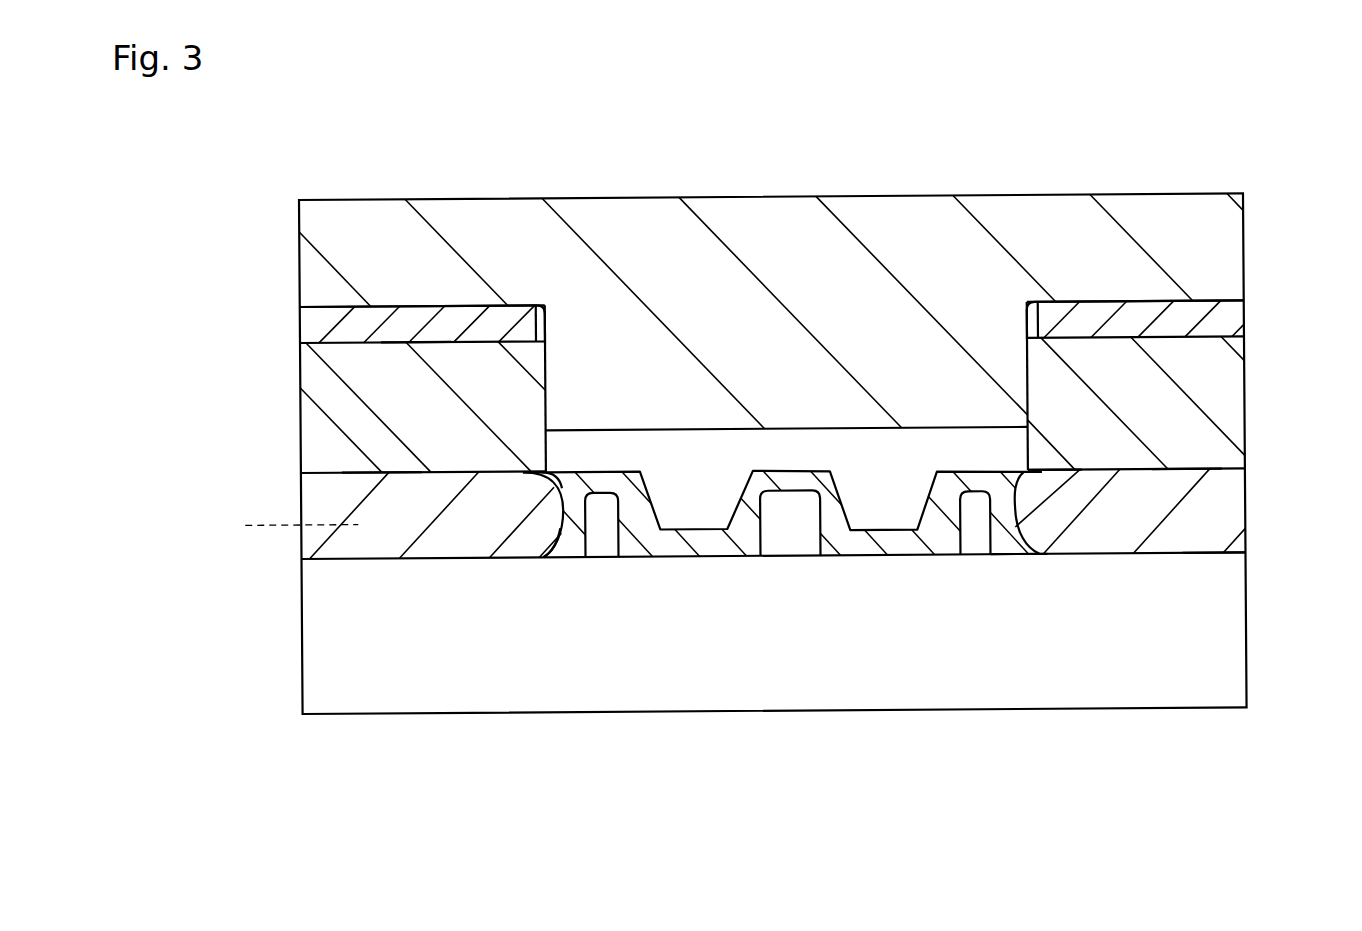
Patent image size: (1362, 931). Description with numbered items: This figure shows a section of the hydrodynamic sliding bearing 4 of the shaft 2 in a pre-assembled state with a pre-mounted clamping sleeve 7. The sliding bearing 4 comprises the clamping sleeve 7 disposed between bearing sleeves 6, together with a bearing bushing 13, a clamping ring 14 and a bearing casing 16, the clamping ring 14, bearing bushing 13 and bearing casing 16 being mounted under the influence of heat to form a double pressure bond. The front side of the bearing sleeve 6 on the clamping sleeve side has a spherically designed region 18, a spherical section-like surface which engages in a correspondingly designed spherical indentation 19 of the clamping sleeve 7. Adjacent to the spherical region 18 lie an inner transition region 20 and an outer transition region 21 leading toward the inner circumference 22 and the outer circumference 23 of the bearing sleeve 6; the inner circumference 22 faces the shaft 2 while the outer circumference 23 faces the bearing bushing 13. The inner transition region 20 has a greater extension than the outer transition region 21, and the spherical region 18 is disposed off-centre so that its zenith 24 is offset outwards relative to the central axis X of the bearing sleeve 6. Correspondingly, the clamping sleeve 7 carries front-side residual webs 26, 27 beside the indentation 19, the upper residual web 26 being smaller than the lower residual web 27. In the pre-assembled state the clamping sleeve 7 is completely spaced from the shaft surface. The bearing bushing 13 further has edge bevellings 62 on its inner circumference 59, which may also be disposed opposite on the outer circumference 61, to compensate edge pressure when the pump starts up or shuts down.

The shaft 2 is at (470, 684).
The sliding bearing 4 is at (415, 597).
The bearing sleeve 6 is at (338, 546).
The clamping sleeve 7 is at (709, 545).
The bearing bushing 13 is at (300, 407).
The clamping ring 14 is at (311, 314).
The bearing casing 16 is at (330, 232).
The spherically designed region 18 is at (1041, 535).
The spherical indentation 19 is at (993, 535).
The inner transition region 20 is at (1027, 567).
The outer transition region 21 is at (1065, 488).
The inner circumference 22 is at (1220, 572).
The outer circumference 23 is at (1183, 460).
The zenith 24 is at (566, 526).
The upper residual web 26 is at (550, 465).
The lower residual web 27 is at (547, 560).
The inner circumference 59 is at (380, 459).
The outer circumference 61 is at (414, 330).
The edge bevelling 62 is at (519, 486).
The central axis X is at (285, 525).